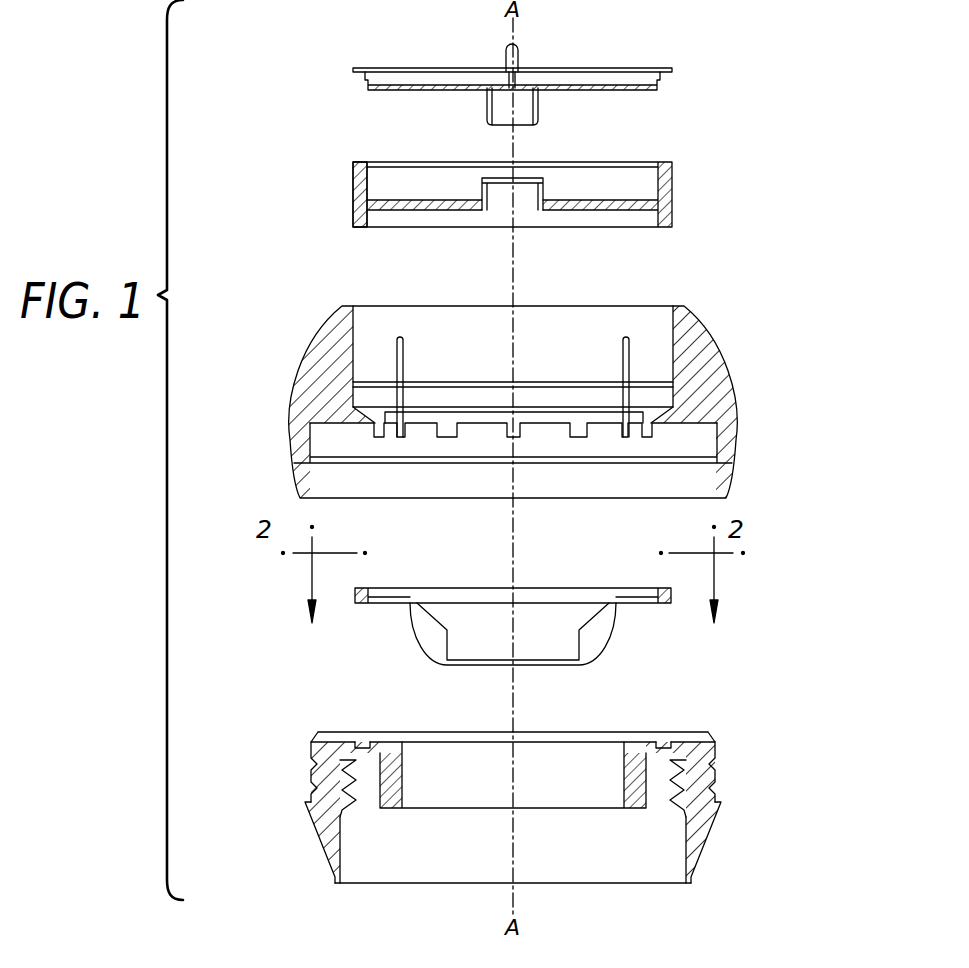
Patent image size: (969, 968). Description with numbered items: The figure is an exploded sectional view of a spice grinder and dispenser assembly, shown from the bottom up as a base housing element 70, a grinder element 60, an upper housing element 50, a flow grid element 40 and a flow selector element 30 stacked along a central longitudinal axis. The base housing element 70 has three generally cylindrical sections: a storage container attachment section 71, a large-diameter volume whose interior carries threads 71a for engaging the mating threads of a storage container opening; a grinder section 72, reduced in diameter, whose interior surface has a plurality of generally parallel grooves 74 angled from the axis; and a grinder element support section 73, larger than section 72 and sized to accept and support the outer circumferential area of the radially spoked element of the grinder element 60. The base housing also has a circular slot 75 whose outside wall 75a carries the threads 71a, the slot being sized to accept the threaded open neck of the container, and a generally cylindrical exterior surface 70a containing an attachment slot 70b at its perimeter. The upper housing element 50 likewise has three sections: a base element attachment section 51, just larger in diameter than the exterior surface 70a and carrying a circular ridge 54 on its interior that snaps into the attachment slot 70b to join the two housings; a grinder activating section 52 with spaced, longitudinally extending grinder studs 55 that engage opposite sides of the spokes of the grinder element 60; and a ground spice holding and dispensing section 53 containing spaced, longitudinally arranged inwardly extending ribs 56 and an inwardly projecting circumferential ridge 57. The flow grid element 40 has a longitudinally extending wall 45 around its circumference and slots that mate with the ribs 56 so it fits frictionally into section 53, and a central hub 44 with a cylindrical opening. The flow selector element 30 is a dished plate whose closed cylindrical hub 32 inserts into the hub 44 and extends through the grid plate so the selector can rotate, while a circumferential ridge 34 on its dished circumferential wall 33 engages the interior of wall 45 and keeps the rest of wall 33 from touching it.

The flow selector element 30 is at (582, 74).
The closed cylindrical hub 32 is at (540, 100).
The dished circumferential wall 33 is at (661, 85).
The circumferential ridge 34 is at (660, 68).
The flow grid element 40 is at (551, 168).
The hub 44 is at (483, 193).
The longitudinally extending wall 45 is at (357, 168).
The upper housing element 50 is at (568, 405).
The base element attachment section 51 is at (480, 480).
The grinder activating section 52 is at (548, 414).
The ground spice holding and dispensing section 53 is at (535, 332).
The circular ridge 54 is at (513, 483).
The grinder studs 55 is at (379, 437).
The inwardly extending ribs 56 is at (404, 340).
The inwardly projecting circumferential ridge 57 is at (450, 382).
The grinder element 60 is at (692, 668).
The base housing element 70 is at (535, 803).
The cylindrical exterior surface 70a is at (311, 788).
The attachment slot 70b is at (316, 763).
The storage container attachment section 71 is at (594, 855).
The threads 71a is at (694, 773).
The grinder section 72 is at (556, 758).
The grinder element support section 73 is at (402, 740).
The grooves 74 is at (442, 787).
The circular slot 75 is at (363, 797).
The outside wall 75a is at (708, 807).